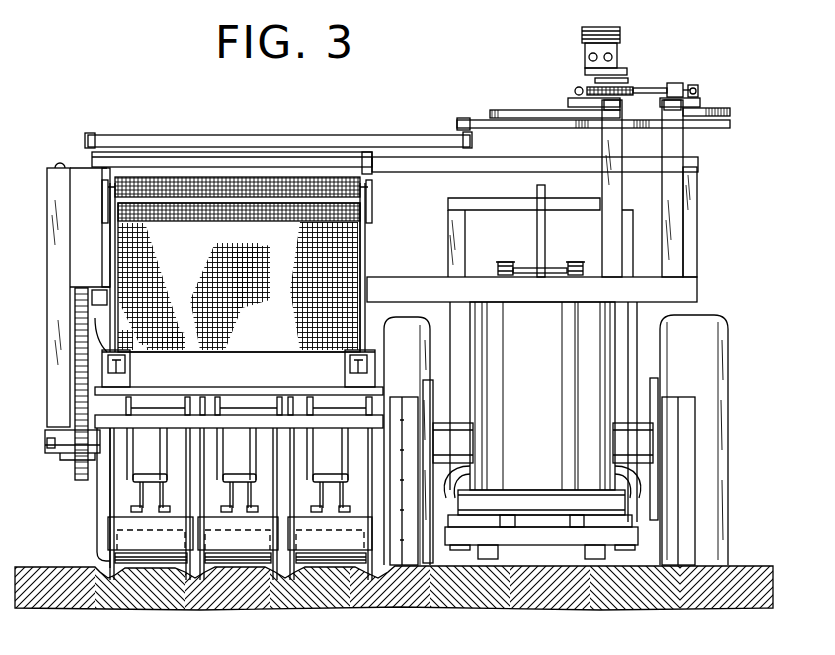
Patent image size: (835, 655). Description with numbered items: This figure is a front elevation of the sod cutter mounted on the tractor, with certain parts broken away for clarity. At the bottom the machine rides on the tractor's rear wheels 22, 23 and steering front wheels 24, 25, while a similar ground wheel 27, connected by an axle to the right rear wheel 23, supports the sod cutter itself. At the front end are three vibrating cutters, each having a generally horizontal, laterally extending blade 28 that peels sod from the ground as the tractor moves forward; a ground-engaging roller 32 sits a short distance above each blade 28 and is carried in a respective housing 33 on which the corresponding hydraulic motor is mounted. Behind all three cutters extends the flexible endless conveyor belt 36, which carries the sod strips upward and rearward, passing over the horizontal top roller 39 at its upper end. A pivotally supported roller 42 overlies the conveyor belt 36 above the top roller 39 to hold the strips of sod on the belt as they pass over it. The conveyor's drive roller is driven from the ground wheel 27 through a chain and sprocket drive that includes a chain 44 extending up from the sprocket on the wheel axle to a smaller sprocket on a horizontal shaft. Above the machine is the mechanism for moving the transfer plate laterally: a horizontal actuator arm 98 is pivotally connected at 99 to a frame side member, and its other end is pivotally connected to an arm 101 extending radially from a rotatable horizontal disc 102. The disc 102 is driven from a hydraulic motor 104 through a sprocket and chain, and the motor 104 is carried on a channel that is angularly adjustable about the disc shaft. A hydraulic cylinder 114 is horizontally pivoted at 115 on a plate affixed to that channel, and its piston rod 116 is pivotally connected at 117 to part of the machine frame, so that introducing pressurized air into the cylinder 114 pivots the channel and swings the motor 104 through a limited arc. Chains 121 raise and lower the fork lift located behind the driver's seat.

The rear wheel 22 is at (725, 373).
The right rear wheel 23 is at (395, 323).
The front wheel 24 is at (682, 398).
The front wheel 25 is at (398, 397).
The ground wheel 27 is at (100, 508).
The blade 28 is at (112, 580).
The ground-engaging roller 32 is at (162, 552).
The housing 33 is at (110, 528).
The conveyor belt 36 is at (260, 342).
The top roller 39 is at (114, 215).
The pivotally supported roller 42 is at (245, 177).
The chain 44 is at (75, 355).
The actuator arm 98 is at (358, 146).
The pivotal connection 99 is at (90, 134).
The arm 101 is at (505, 119).
The disc 102 is at (588, 129).
The hydraulic motor 104 is at (613, 50).
The hydraulic cylinder 114 is at (642, 86).
The pivot 115 is at (575, 91).
The piston rod 116 is at (683, 83).
The pivotal connection 117 is at (700, 89).
The chains 121 is at (572, 262).